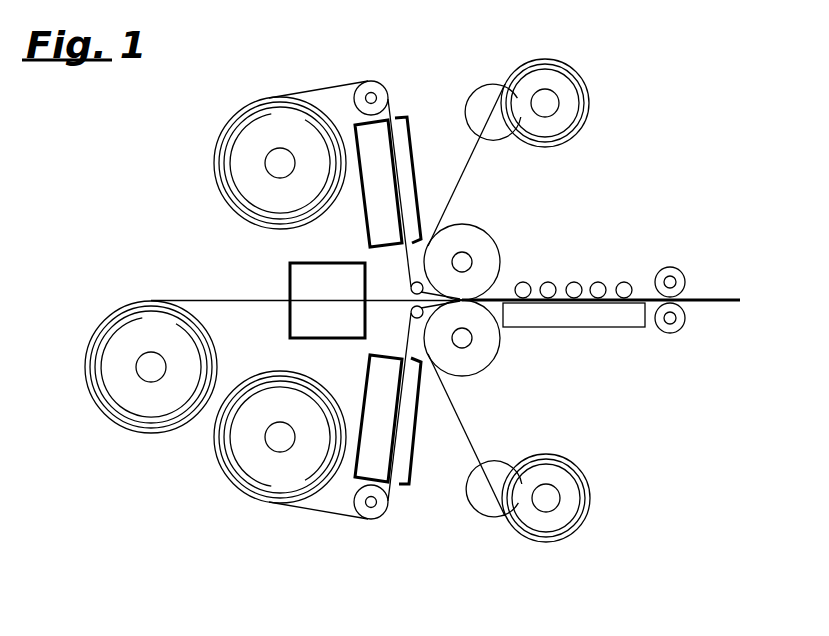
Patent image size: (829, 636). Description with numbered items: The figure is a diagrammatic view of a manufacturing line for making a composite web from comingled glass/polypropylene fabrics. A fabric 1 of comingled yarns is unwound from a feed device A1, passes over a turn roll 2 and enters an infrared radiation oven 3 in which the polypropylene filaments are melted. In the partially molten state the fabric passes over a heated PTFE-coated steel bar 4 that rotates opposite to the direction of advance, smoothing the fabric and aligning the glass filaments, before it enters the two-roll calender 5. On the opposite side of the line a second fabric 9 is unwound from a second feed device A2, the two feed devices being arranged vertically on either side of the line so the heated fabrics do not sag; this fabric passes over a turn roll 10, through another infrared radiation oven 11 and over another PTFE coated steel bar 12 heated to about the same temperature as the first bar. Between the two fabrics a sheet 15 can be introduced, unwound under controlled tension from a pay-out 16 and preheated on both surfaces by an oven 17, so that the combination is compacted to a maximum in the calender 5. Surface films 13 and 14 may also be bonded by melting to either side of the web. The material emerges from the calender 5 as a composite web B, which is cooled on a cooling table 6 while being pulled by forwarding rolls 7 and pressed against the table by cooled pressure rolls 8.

The fabric 1 is at (305, 92).
The turn roll 2 is at (379, 84).
The infrared radiation oven 3 is at (410, 128).
The PTFE-coated steel bar 4 is at (412, 284).
The two-roll calender 5 is at (487, 233).
The cooling table 6 is at (588, 322).
The forwarding rolls 7 is at (677, 270).
The cooled pressure rolls 8 is at (578, 282).
The fabric 9 is at (322, 512).
The turn roll 10 is at (378, 517).
The infrared radiation oven 11 is at (412, 478).
The PTFE coated steel bar 12 is at (412, 316).
The surface film 13 is at (494, 103).
The surface film 14 is at (496, 500).
The sheet 15 is at (178, 300).
The pay-out 16 is at (115, 381).
The oven 17 is at (289, 283).
The feed device A1 is at (245, 143).
The feed device A2 is at (240, 460).
The composite web B is at (742, 318).